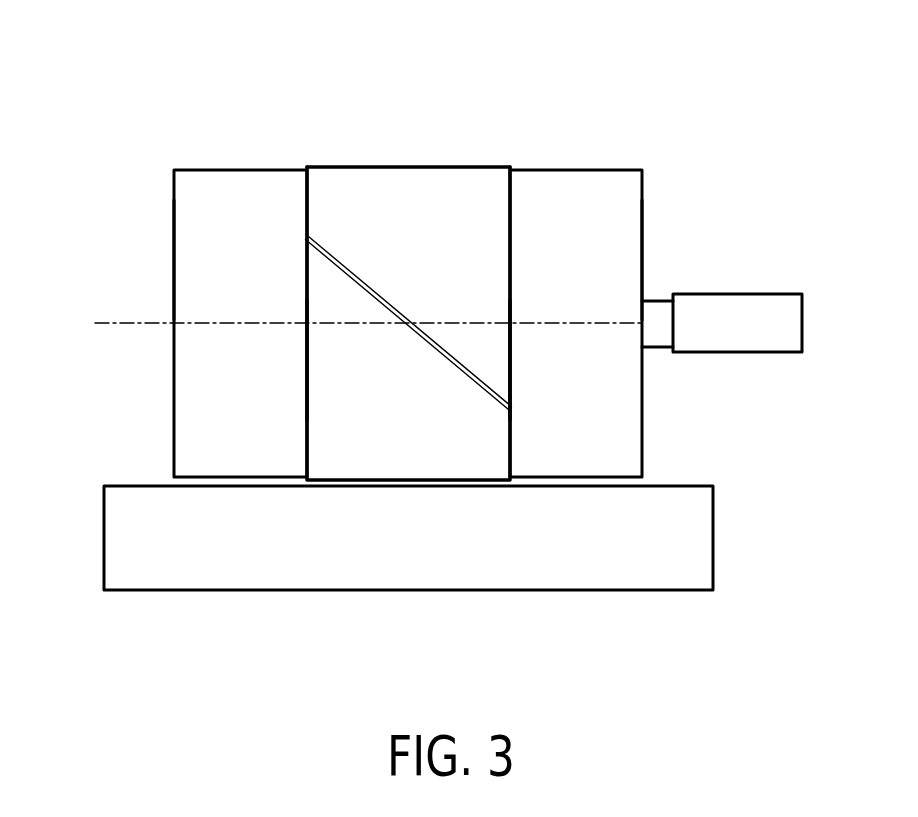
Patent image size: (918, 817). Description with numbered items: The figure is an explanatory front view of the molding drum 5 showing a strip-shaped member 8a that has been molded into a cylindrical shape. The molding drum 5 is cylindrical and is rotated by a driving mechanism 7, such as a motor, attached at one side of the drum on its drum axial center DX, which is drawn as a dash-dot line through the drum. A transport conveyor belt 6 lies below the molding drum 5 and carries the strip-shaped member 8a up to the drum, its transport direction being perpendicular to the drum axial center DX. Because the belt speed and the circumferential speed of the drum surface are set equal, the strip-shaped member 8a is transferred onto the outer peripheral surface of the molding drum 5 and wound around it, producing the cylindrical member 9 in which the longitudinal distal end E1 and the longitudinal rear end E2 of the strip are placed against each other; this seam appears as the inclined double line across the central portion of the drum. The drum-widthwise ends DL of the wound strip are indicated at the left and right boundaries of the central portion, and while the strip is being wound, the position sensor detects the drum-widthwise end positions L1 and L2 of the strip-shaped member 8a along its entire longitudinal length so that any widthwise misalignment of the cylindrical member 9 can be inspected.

The molding drum 5 is at (277, 187).
The transport conveyor belt 6 is at (386, 575).
The driving mechanism 7 is at (727, 303).
The strip-shaped member 8a is at (492, 273).
The cylindrical member 9 is at (417, 263).
The longitudinal distal end E1 is at (432, 350).
The longitudinal rear end E2 is at (368, 286).
The drum-widthwise end position L1 is at (305, 362).
The drum-widthwise end position L2 is at (512, 380).
The drum-widthwise ends DL is at (174, 252).
The drum axial center DX is at (125, 323).